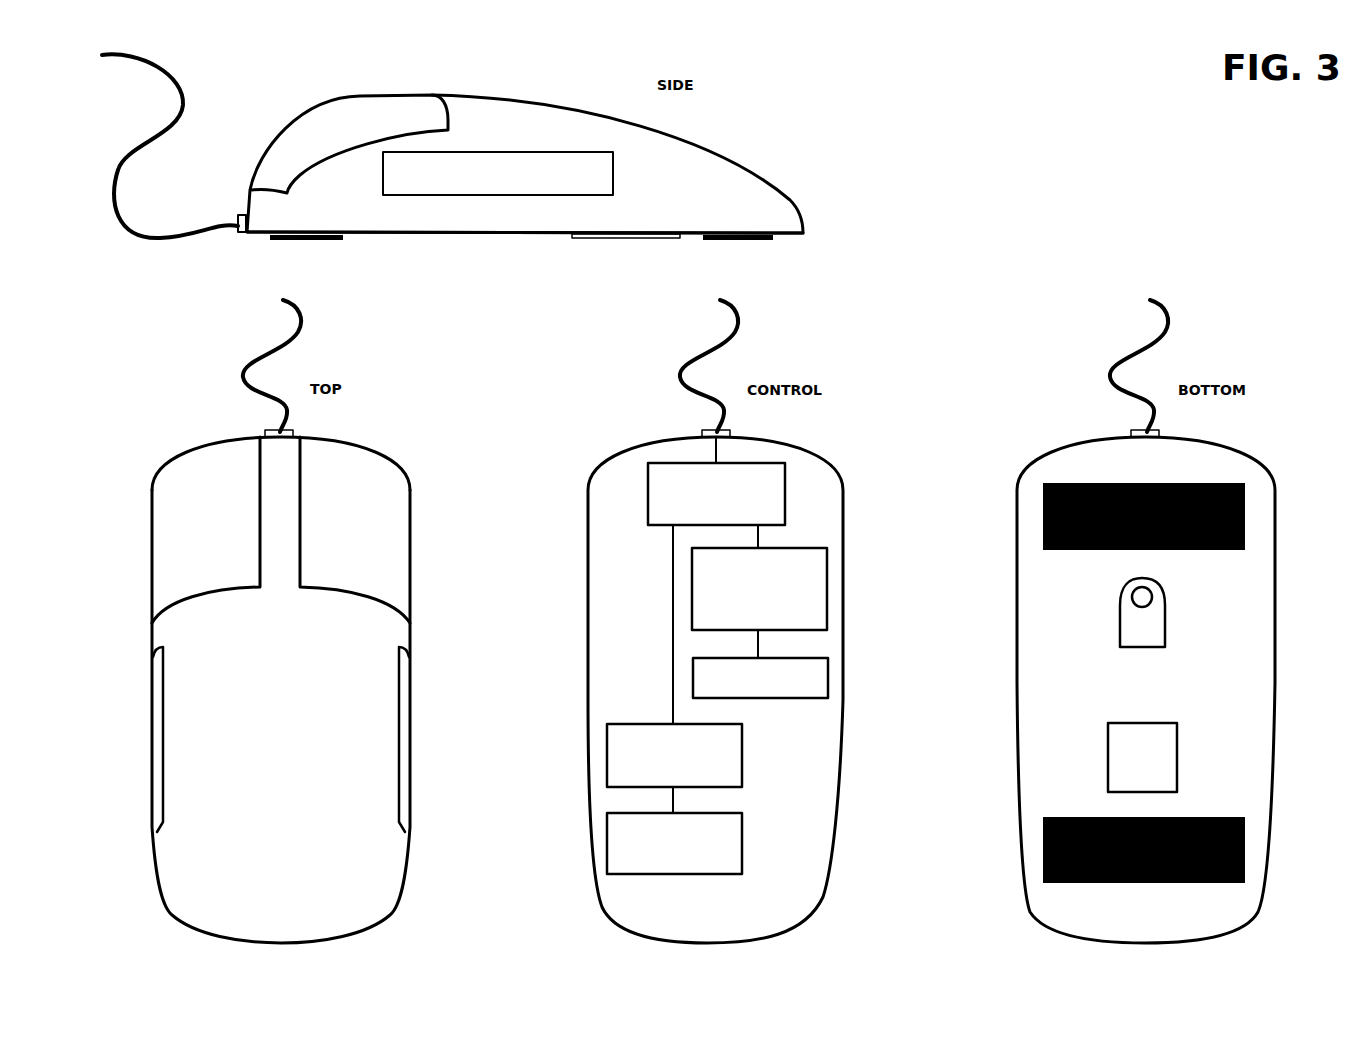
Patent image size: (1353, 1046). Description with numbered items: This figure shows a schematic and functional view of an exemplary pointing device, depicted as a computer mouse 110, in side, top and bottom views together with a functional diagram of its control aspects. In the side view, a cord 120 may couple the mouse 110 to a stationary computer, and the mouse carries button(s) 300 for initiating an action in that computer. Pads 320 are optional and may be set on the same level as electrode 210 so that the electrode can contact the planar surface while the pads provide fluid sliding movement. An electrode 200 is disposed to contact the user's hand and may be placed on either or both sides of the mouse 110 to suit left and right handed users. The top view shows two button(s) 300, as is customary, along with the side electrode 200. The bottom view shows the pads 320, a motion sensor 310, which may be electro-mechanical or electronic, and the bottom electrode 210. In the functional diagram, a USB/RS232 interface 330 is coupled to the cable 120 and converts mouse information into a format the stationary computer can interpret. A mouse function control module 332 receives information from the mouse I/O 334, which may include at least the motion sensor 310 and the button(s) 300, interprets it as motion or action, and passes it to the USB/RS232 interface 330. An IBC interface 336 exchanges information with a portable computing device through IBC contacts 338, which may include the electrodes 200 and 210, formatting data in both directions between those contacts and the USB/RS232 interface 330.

The pointing device (computer mouse) 110 is at (527, 164).
The cord 120 is at (174, 146).
The electrode 200 is at (359, 492).
The electrode 210 is at (898, 513).
The button 300 is at (324, 340).
The motion sensor 310 is at (1166, 612).
The pads 320 is at (757, 559).
The USB/RS232 interface 330 is at (692, 509).
The mouse function control module 332 is at (792, 589).
The mouse I/O 334 is at (795, 667).
The IBC interface 336 is at (639, 751).
The IBC contacts 338 is at (640, 839).